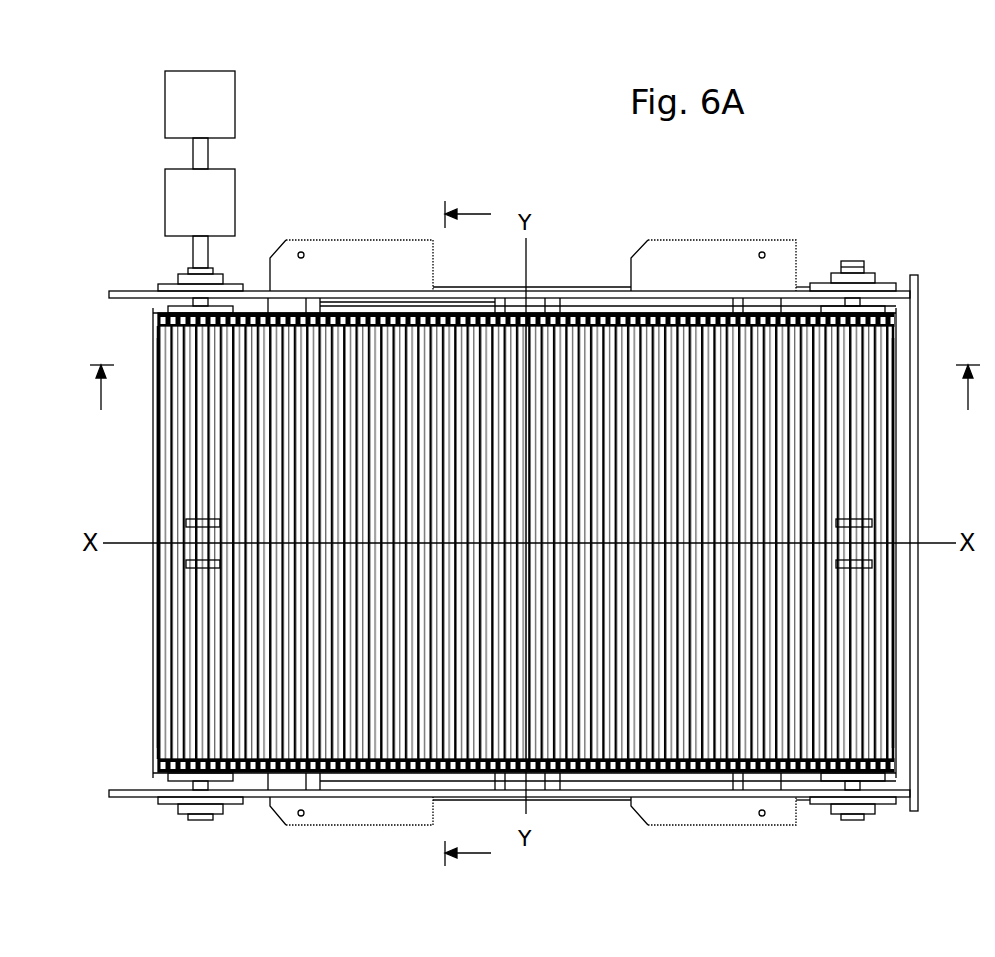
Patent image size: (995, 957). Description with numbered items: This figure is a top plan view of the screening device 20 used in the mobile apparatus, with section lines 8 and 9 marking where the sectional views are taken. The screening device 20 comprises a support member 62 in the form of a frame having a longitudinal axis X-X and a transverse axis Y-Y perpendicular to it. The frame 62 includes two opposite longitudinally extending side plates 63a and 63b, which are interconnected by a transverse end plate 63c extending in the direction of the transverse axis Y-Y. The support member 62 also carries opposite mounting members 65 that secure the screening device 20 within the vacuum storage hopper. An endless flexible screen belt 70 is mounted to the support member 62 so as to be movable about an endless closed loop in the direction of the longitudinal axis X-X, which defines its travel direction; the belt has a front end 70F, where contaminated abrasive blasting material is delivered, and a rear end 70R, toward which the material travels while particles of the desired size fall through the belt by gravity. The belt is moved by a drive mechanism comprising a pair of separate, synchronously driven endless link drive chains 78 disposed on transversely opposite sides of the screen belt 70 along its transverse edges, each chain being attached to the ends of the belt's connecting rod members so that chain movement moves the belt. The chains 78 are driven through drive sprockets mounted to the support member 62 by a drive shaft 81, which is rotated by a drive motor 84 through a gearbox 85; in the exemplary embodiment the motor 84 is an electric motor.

The screening device 20 is at (835, 212).
The support member 62 is at (915, 452).
The side plate 63a is at (112, 283).
The side plate 63b is at (112, 789).
The transverse end plate 63c is at (910, 718).
The mounting member 65 is at (363, 240).
The endless flexible screen belt 70 is at (140, 692).
The rear end of the screen belt 70R is at (148, 607).
The front end of the screen belt 70F is at (888, 648).
The link drive chain 78 is at (150, 312).
The drive shaft 81 is at (200, 250).
The drive motor 84 is at (228, 95).
The gearbox 85 is at (228, 188).
The section line 8 is at (530, 387).
The section line 9 is at (468, 527).